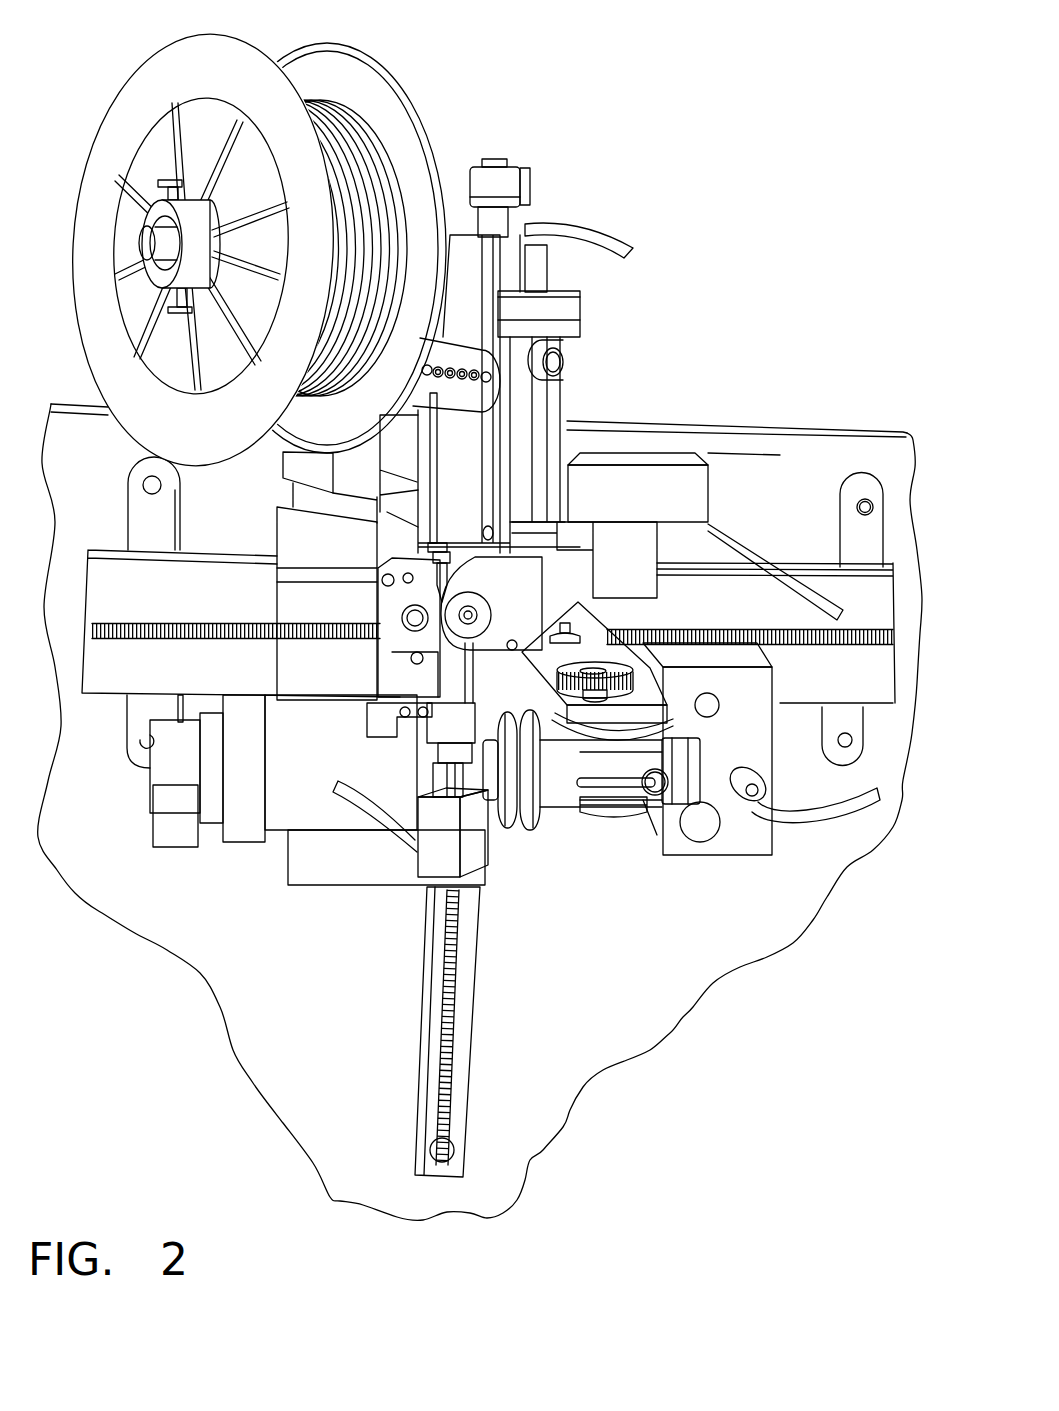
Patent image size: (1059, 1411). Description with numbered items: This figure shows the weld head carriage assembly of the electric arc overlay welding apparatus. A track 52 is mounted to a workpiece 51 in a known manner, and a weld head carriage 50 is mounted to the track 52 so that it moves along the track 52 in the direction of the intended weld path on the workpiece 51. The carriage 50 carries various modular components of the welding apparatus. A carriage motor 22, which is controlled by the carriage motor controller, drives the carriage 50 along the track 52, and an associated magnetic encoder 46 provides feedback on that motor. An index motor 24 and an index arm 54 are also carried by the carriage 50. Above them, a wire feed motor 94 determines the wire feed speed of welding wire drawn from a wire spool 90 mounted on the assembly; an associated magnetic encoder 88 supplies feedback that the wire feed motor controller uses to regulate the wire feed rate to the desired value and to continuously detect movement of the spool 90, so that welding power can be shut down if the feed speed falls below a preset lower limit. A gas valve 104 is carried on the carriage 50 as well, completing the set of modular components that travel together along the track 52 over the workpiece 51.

The carriage motor 22 is at (318, 830).
The index motor 24 is at (360, 875).
The magnetic encoder 46 is at (173, 757).
The weld head carriage 50 is at (303, 543).
The workpiece 51 is at (623, 987).
The track 52 is at (173, 677).
The index arm 54 is at (470, 938).
The magnetic encoder 88 is at (543, 265).
The wire spool 90 is at (148, 81).
The wire feed motor 94 is at (562, 500).
The gas valve 104 is at (495, 217).